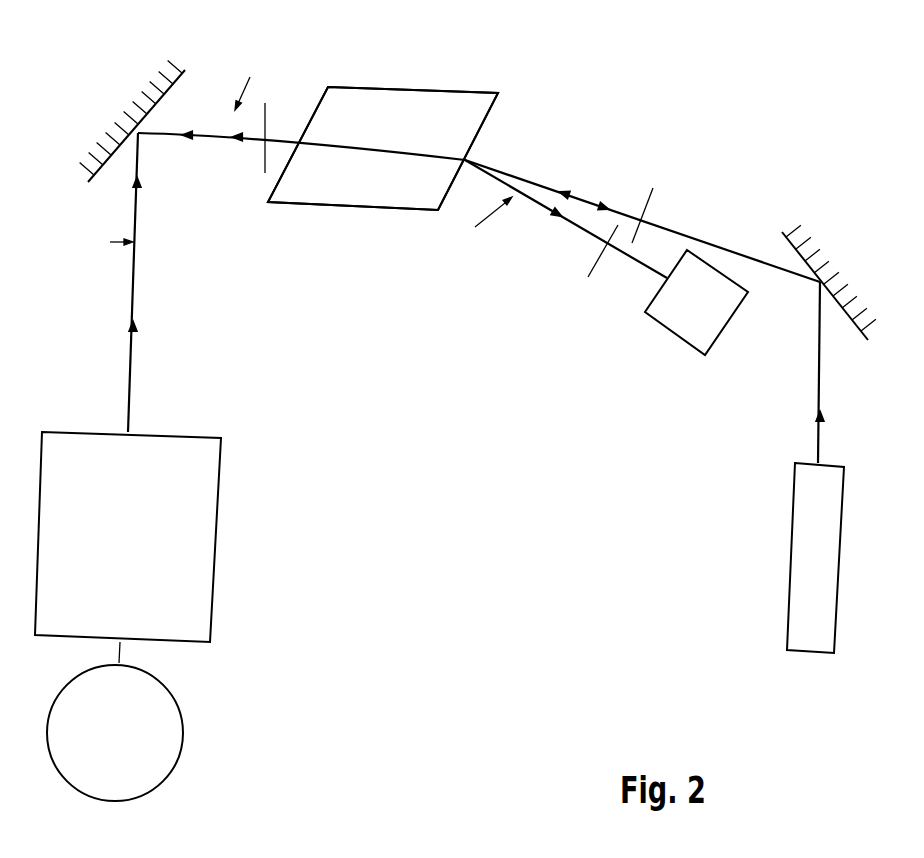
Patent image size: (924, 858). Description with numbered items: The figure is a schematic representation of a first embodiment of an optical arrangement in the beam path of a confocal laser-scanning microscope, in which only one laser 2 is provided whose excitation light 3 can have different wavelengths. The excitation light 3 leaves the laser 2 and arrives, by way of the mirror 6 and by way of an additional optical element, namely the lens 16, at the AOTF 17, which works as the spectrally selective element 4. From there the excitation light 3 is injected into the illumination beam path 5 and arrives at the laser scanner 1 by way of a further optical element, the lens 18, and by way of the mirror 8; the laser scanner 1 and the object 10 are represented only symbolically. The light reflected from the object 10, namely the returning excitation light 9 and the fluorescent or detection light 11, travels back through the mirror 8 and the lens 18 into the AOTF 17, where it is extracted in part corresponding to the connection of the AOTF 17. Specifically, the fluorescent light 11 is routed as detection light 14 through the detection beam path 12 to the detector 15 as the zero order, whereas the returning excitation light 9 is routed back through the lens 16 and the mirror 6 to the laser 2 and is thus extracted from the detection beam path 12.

The laser scanner 1 is at (215, 578).
The laser 2 is at (793, 575).
The excitation light 3 is at (818, 428).
The spectrally selective element 4 is at (383, 148).
The illumination beam path 5 is at (107, 244).
The mirror 6 is at (807, 240).
The mirror 8 is at (176, 88).
The returning excitation light 9 is at (580, 197).
The object 10 is at (115, 733).
The fluorescent light 11 is at (177, 137).
The detection beam path 12 is at (373, 151).
The detection light 14 is at (580, 223).
The detector 15 is at (670, 337).
The lens 16 is at (655, 200).
The AOTF 17 is at (402, 87).
The lens 18 is at (268, 120).